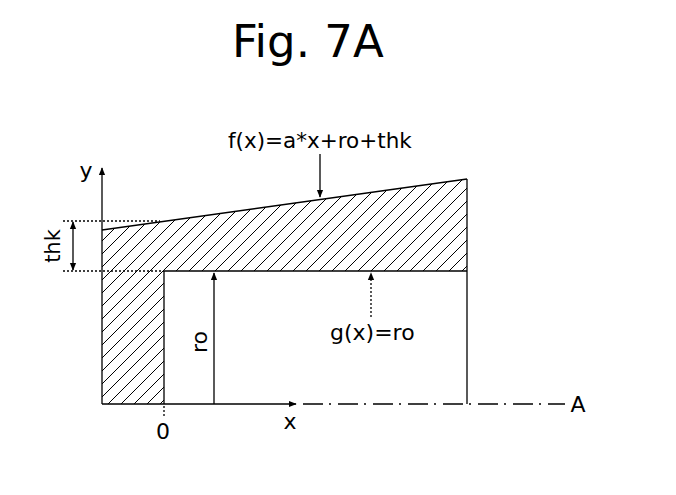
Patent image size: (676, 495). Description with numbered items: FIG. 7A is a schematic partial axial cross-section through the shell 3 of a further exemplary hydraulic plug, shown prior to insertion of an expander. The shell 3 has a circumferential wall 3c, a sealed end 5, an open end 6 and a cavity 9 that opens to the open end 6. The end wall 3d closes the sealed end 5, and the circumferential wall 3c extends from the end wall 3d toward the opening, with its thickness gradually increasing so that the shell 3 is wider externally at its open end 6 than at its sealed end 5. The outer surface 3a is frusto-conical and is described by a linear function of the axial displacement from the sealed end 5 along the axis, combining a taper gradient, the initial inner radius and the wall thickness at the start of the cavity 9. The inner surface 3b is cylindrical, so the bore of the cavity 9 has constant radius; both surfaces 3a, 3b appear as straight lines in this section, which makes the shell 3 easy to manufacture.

The shell 3 is at (430, 212).
The outer surface 3a is at (230, 212).
The inner surface 3b is at (423, 272).
The circumferential wall 3c is at (177, 233).
The end wall 3d is at (128, 376).
The sealed end 5 is at (102, 320).
The open end 6 is at (468, 360).
The cavity 9 is at (257, 347).